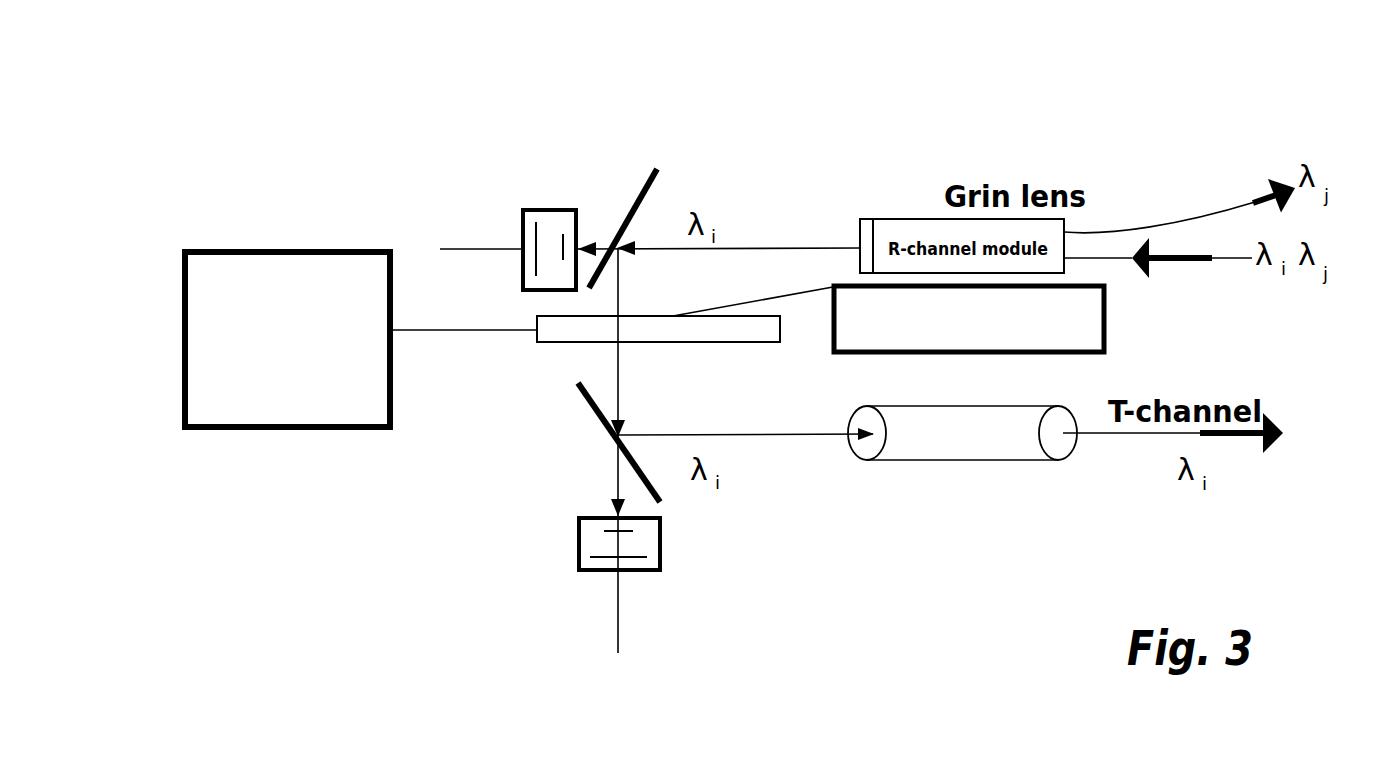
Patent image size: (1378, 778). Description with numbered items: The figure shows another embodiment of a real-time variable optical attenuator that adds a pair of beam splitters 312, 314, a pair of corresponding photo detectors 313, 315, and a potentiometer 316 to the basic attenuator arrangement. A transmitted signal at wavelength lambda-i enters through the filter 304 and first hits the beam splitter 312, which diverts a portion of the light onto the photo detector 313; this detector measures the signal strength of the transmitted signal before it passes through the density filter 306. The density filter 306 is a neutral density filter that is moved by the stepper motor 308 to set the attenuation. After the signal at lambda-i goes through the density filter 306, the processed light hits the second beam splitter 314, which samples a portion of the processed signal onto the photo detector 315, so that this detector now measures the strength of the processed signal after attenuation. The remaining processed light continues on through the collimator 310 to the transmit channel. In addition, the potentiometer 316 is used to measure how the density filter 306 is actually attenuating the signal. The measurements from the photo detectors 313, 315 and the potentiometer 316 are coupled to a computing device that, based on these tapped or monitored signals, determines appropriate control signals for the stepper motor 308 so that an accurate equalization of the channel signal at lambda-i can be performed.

The filter 304 is at (880, 212).
The density filter 306 is at (681, 346).
The stepper motor 308 is at (287, 339).
The collimator 310 is at (962, 474).
The beam splitter 312 is at (697, 201).
The photo detector 313 is at (464, 223).
The beam splitter 314 is at (546, 436).
The photo detector 315 is at (520, 524).
The potentiometer 316 is at (1090, 325).